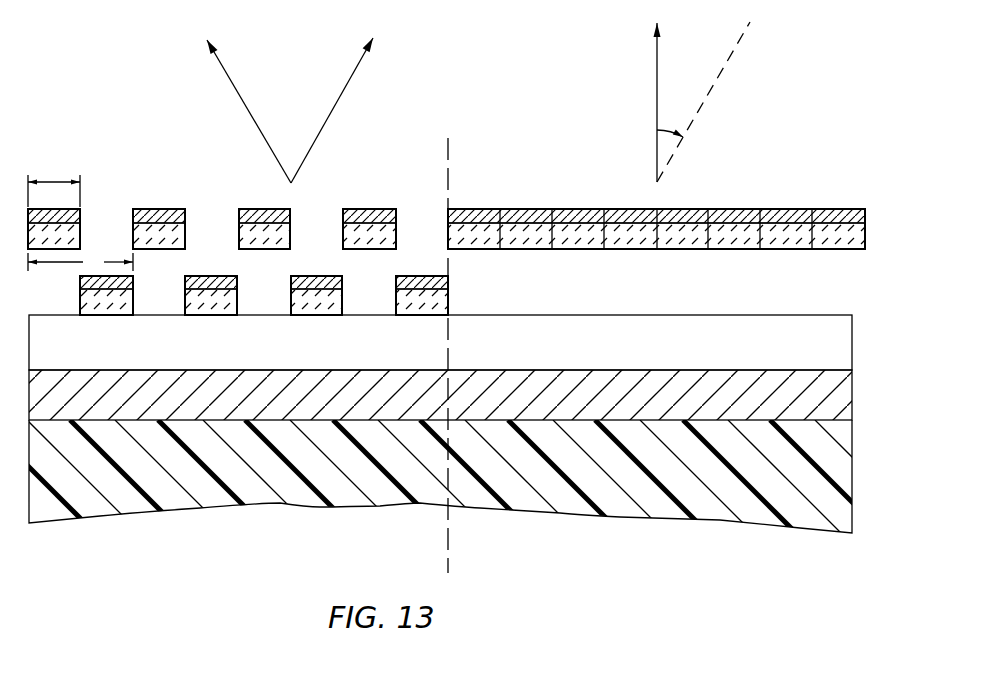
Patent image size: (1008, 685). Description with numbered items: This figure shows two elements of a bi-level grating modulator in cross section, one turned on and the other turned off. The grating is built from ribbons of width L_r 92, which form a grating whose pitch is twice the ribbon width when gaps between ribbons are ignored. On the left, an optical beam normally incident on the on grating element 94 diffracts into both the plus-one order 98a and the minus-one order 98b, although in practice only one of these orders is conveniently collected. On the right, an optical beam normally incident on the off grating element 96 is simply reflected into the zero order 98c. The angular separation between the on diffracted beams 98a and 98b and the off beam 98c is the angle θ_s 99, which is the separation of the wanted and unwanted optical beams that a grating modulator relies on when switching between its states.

The ribbon width L_r 92 is at (59, 152).
The on grating element 94 is at (222, 525).
The off grating element 96 is at (630, 557).
The +1 order diffracted beam 98a is at (352, 83).
The −1 order diffracted beam 98b is at (232, 88).
The 0 order reflected beam 98c is at (656, 50).
The angular separation θ_s 99 is at (690, 90).